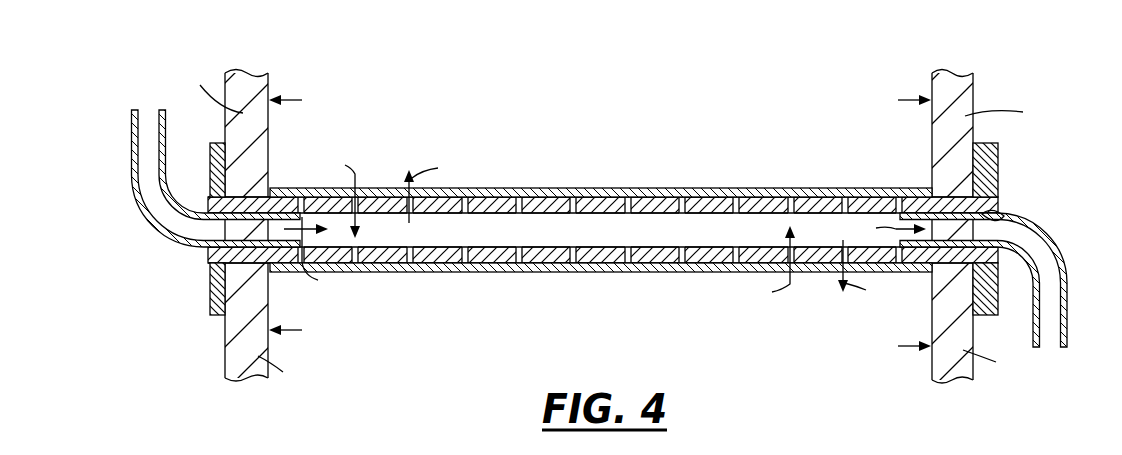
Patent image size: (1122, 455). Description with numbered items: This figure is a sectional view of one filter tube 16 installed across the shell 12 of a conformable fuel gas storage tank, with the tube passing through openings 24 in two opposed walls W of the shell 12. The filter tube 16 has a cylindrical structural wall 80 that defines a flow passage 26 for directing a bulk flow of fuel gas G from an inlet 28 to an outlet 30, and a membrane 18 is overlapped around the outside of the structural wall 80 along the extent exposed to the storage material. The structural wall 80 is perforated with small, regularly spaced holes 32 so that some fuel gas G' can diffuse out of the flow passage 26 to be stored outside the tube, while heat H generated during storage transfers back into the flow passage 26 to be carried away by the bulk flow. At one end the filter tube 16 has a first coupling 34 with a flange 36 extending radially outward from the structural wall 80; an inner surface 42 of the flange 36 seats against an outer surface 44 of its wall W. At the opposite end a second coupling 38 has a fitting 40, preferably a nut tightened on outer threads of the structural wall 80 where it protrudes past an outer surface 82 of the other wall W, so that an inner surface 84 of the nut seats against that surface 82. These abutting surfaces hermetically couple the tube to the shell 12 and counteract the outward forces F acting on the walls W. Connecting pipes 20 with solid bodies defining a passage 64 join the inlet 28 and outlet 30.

The shell 12 is at (982, 86).
The filter tube 16 is at (496, 272).
The membrane 18 is at (817, 188).
The connecting pipe 20 is at (126, 205).
The opening 24 is at (603, 227).
The flow passage 26 is at (559, 240).
The inlet 28 is at (210, 259).
The outlet 30 is at (1004, 222).
The holes 32 is at (736, 188).
The first coupling 34 is at (200, 160).
The flange 36 is at (211, 300).
The second coupling 38 is at (1010, 148).
The fitting 40 is at (1000, 157).
The inner surface of flange 42 is at (236, 328).
The outer surface of wall 44 is at (232, 378).
The passage 64 is at (168, 226).
The structural wall 80 is at (397, 267).
The outer surface of wall 82 is at (976, 334).
The inner surface of nut 84 is at (935, 298).